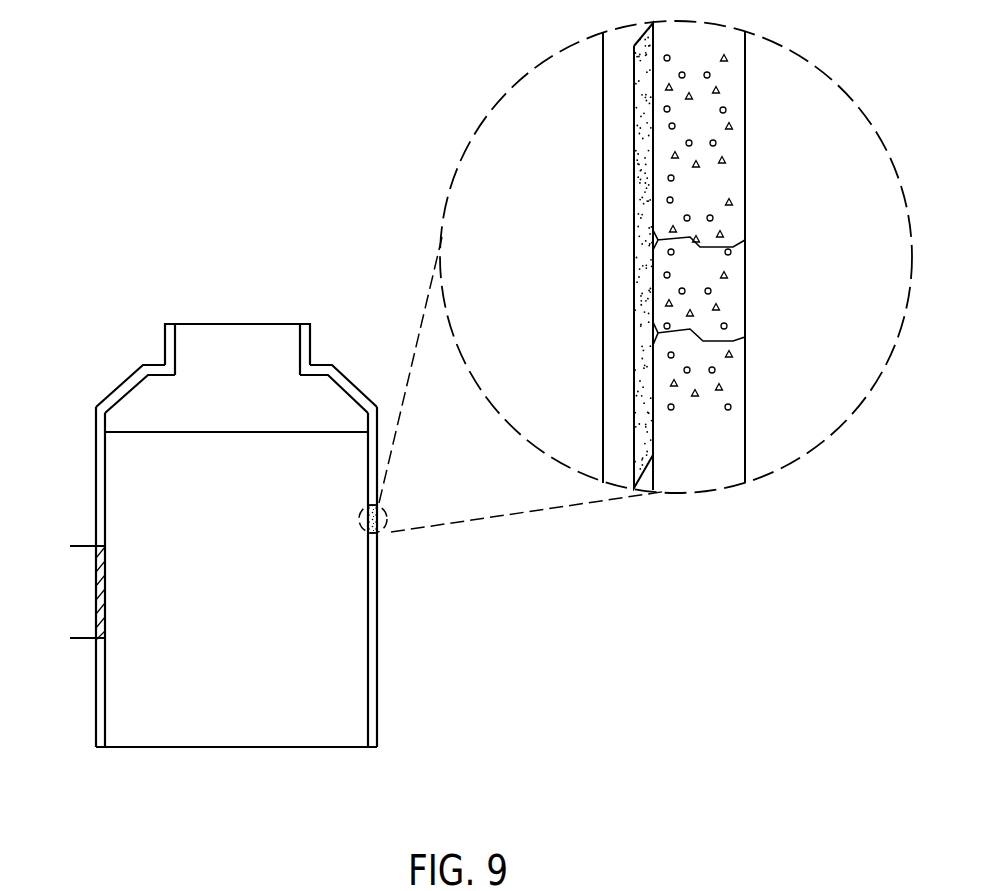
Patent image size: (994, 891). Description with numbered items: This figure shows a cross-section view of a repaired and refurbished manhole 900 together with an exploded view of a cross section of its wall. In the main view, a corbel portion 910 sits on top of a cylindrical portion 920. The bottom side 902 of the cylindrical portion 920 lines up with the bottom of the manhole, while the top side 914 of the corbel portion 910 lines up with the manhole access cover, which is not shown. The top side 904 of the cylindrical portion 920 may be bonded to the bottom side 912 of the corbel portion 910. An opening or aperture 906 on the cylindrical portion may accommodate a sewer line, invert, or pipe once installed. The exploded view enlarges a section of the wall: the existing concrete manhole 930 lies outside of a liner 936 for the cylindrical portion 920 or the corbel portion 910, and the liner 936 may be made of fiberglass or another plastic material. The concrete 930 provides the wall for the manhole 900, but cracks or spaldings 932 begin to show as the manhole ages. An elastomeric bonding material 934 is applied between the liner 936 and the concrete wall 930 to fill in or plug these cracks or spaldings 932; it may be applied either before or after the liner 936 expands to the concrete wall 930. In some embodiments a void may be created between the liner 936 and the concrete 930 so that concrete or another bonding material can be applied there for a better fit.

The repaired and refurbished manhole 900 is at (148, 331).
The bottom side of the cylindrical portion 902 is at (237, 732).
The top side of the cylindrical portion 904 is at (228, 430).
The opening or aperture 906 is at (98, 608).
The corbel portion 910 is at (342, 383).
The bottom side of the corbel portion 912 is at (340, 428).
The top side of the corbel portion 914 is at (275, 323).
The cylindrical portion 920 is at (360, 612).
The existing concrete manhole 930 is at (727, 190).
The cracks or spaldings 932 is at (657, 338).
The elastomeric bonding material 934 is at (635, 328).
The liner 936 is at (620, 172).